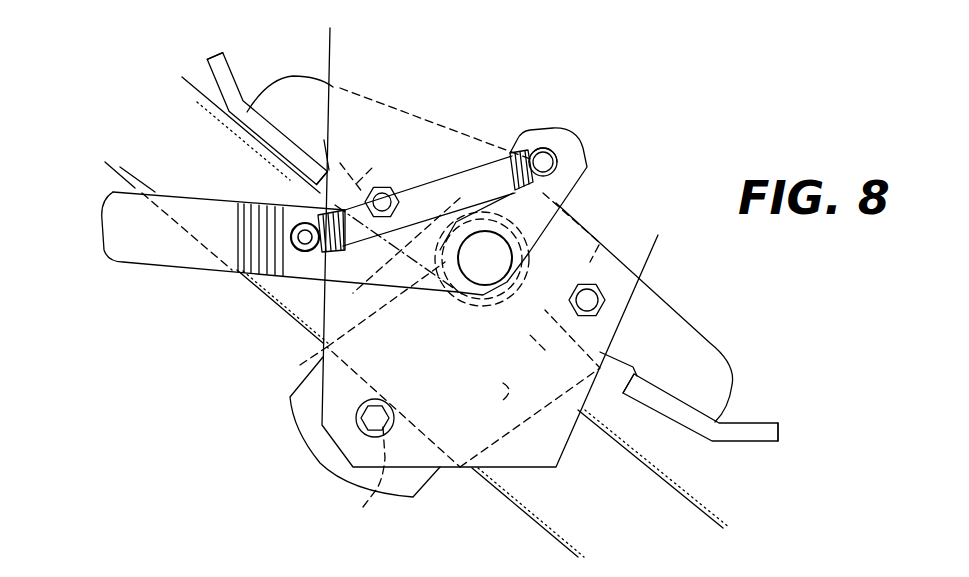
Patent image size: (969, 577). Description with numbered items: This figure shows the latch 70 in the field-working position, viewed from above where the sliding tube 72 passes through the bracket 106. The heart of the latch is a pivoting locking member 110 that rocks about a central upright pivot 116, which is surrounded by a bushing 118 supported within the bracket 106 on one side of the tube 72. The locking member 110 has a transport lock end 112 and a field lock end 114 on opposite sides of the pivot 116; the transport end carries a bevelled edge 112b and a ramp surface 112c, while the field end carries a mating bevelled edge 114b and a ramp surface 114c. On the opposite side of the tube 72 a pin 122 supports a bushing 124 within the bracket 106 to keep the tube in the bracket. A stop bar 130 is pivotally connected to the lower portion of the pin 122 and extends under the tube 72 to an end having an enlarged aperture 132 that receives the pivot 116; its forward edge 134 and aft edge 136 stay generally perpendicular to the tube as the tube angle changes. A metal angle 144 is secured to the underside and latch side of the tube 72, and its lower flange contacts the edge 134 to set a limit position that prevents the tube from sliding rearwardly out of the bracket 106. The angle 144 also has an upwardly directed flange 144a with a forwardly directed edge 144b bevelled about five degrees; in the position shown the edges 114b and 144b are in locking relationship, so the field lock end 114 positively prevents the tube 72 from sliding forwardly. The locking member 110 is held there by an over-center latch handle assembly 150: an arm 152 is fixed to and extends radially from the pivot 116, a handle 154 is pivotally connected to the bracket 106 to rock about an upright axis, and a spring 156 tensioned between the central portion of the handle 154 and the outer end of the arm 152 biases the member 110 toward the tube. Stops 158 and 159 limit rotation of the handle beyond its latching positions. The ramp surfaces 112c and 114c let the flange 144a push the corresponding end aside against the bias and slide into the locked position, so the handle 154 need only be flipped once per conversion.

The latch 70 is at (637, 161).
The sliding tube 72 is at (172, 122).
The bracket 106 is at (565, 443).
The pivoting locking member 110 is at (703, 328).
The transport lock end 112 is at (738, 423).
The bevelled edge 112b is at (627, 383).
The ramp surface 112c is at (757, 443).
The field lock end 114 is at (280, 135).
The bevelled edge 114b is at (312, 184).
The ramp surface 114c is at (207, 62).
The central upright pivot 116 is at (487, 275).
The bushing 118 is at (556, 218).
The pin 122 is at (368, 430).
The bushing 124 is at (366, 496).
The stop bar 130 is at (418, 497).
The enlarged aperture 132 is at (558, 352).
The forward edge 134 is at (355, 318).
The aft edge 136 is at (503, 382).
The metal angle 144 is at (282, 285).
The upwardly directed flange 144a is at (375, 190).
The forwardly directed bevelled edge 144b is at (326, 180).
The over-center latch handle assembly 150 is at (549, 88).
The arm 152 is at (557, 130).
The handle 154 is at (103, 243).
The spring 156 is at (500, 157).
The stop 158 is at (390, 187).
The stop 159 is at (600, 278).